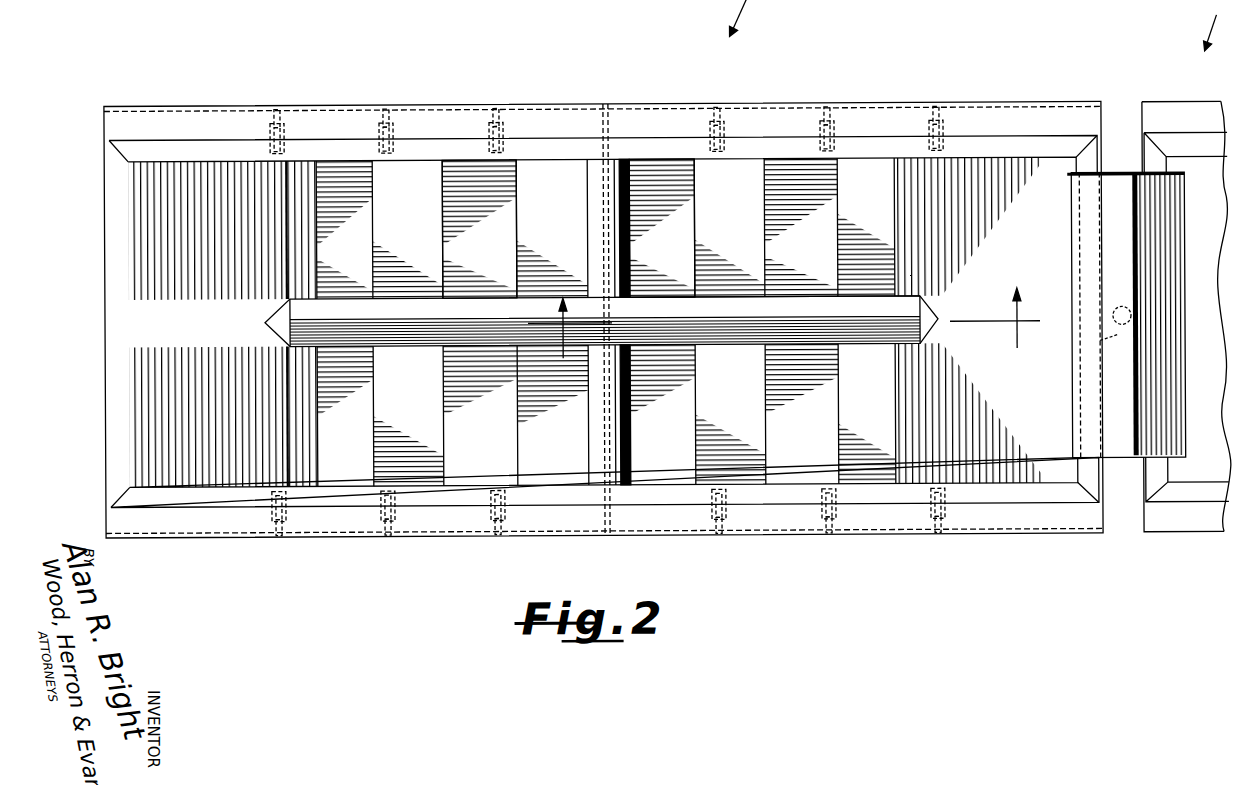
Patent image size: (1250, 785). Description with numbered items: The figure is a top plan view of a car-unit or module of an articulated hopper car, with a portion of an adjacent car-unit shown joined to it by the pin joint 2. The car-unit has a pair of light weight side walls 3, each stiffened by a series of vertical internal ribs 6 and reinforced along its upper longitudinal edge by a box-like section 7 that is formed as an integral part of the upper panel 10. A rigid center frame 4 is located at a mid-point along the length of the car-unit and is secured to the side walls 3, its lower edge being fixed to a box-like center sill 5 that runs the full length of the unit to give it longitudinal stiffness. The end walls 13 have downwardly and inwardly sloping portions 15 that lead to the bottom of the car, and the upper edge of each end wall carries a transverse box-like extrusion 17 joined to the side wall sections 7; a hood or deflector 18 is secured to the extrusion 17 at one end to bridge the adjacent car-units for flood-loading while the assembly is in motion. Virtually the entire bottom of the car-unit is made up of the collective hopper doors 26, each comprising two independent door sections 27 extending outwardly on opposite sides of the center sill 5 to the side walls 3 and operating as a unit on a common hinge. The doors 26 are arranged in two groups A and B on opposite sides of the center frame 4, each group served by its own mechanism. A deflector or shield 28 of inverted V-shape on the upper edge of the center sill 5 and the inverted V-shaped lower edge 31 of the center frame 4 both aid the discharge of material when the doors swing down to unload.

The pin joint 2 is at (1122, 332).
The side wall 3 is at (1199, 86).
The center frame 4 is at (600, 254).
The center sill 5 is at (805, 296).
The vertical internal rib 6 is at (281, 112).
The box-like section 7 is at (772, 150).
The upper panel 10 is at (540, 122).
The end wall 13 is at (150, 325).
The sloping portion 15 is at (185, 290).
The box-like extrusion 17 is at (118, 226).
The hood or deflector 18 is at (1184, 292).
The hopper door 26 is at (474, 176).
The door section 27 is at (606, 322).
The deflector or shield 28 is at (350, 300).
The V-shaped lower edge 31 is at (633, 278).
The door group A is at (435, 465).
The door group B is at (824, 452).